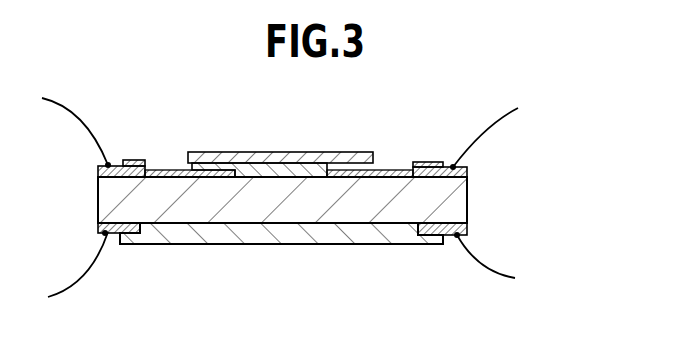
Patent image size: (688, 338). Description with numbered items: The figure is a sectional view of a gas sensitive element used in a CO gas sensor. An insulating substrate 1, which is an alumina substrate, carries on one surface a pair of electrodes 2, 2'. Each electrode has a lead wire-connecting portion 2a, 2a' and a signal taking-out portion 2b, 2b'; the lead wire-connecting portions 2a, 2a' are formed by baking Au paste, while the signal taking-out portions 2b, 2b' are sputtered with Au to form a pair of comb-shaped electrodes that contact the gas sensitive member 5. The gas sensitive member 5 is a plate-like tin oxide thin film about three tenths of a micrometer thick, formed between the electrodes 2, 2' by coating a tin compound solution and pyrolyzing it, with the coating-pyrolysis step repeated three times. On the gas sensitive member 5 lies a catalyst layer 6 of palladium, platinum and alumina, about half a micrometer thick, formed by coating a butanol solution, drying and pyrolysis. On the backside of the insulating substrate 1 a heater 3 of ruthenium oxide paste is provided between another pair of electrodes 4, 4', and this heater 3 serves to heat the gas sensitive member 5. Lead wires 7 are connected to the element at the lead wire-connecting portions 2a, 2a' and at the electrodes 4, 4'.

The insulating substrate 1 is at (462, 200).
The electrode 2 is at (445, 68).
The lead wire-connecting portion 2a is at (444, 134).
The signal taking-out portion 2b is at (424, 129).
The electrode 2' is at (149, 81).
The lead wire-connecting portion 2a' is at (121, 141).
The signal taking-out portion 2b' is at (156, 135).
The heater 3 is at (303, 244).
The electrode 4 is at (464, 237).
The electrode 4' is at (96, 230).
The gas sensitive member 5 is at (375, 168).
The catalyst layer 6 is at (323, 152).
The lead wire 7 is at (73, 112).